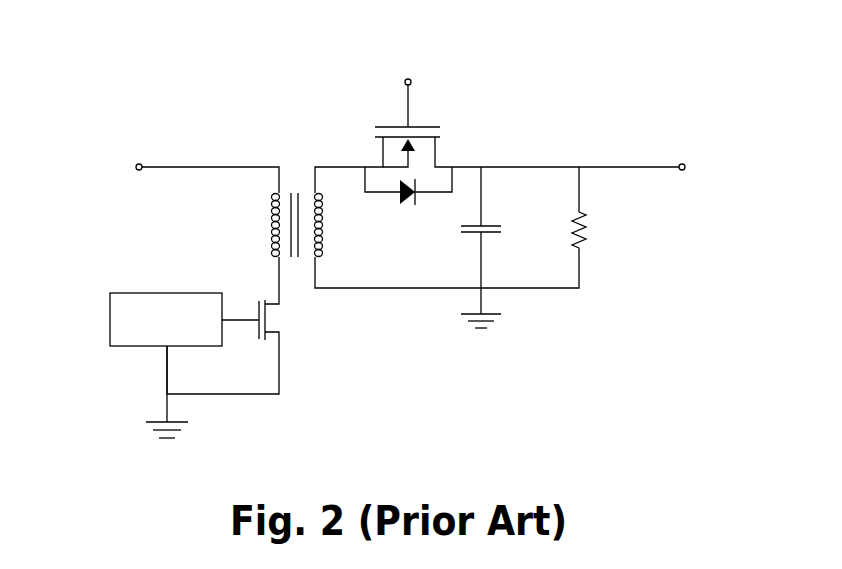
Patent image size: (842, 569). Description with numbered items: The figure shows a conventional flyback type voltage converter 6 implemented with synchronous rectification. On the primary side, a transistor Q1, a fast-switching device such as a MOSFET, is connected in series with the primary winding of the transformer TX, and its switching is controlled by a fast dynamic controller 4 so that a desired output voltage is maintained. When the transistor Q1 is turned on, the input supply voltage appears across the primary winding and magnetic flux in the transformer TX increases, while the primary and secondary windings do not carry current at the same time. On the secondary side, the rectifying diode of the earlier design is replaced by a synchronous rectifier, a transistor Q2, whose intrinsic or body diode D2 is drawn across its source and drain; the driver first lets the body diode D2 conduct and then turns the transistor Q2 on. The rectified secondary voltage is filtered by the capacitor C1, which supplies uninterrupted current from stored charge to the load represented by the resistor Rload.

The controller 4 is at (166, 293).
The power converter circuit 6 is at (579, 72).
The transistor Q1 is at (263, 320).
The transistor Q2 is at (436, 108).
The diode D2 is at (408, 198).
The capacitor C1 is at (466, 240).
The transformer TX is at (294, 237).
The resistor Rload is at (611, 207).